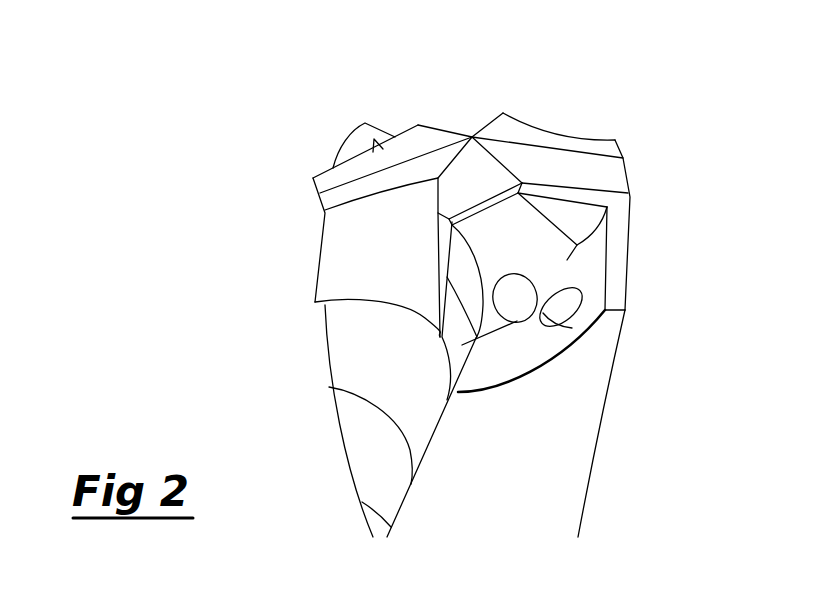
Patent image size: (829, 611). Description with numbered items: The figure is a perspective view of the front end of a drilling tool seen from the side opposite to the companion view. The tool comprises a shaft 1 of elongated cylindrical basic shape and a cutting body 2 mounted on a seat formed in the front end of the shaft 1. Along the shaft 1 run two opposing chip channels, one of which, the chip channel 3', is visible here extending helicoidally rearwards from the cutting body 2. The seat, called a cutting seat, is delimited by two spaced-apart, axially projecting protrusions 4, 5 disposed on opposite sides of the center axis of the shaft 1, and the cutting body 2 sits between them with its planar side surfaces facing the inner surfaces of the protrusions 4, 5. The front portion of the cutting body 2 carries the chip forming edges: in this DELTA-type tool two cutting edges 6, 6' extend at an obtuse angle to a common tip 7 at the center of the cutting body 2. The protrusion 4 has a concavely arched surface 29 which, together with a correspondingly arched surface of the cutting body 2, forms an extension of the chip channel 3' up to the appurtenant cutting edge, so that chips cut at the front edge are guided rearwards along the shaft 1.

The shaft 1 is at (600, 448).
The cutting body 2 is at (637, 165).
The chip channel 3' is at (402, 437).
The protrusion 4 is at (607, 263).
The protrusion 5 is at (372, 131).
The cutting edge 6 is at (538, 151).
The cutting edge 6' is at (381, 231).
The tip 7 is at (472, 133).
The concavely arched surface 29 is at (462, 345).